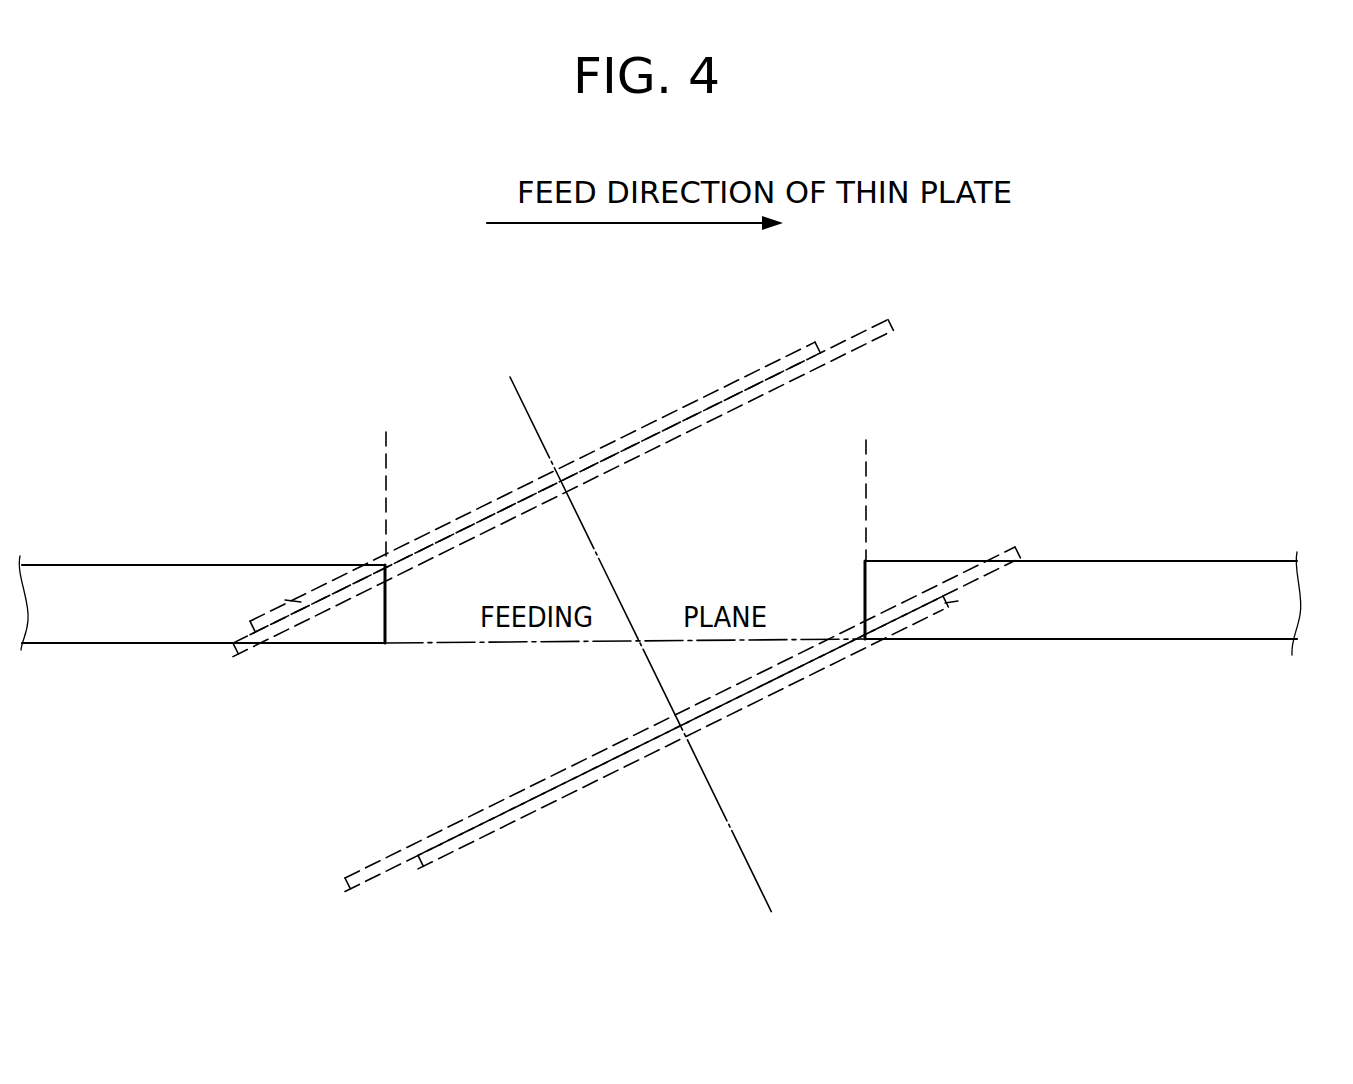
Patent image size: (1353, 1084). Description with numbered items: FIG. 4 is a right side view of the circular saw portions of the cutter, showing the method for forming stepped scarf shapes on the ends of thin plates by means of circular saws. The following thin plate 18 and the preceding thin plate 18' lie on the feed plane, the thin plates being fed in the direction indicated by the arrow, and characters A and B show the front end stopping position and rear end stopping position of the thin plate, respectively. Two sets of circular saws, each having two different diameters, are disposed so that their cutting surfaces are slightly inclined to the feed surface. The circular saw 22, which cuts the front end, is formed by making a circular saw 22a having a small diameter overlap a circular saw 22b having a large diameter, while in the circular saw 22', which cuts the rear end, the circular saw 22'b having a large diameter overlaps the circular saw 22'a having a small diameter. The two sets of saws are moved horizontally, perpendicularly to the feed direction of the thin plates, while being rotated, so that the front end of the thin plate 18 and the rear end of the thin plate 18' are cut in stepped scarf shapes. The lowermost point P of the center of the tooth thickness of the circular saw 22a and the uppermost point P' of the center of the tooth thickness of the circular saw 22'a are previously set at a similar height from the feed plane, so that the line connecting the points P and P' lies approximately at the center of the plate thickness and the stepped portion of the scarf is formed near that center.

The thin plate 18 is at (202, 566).
The thin plate 18' is at (1083, 573).
The circular saw 22 is at (649, 445).
The circular saw having a small diameter 22a is at (781, 358).
The circular saw having a large diameter 22b is at (618, 488).
The circular saw 22' is at (630, 744).
The circular saw having a small diameter 22'a is at (626, 769).
The circular saw having a large diameter 22'b is at (662, 719).
The lowermost point of the center of the tooth thickness of circular saw 22a P is at (291, 541).
The uppermost point of the center of the tooth thickness of circular saw 22'a P' is at (957, 690).
The front end stopping position A is at (384, 478).
The rear end stopping position B is at (866, 481).